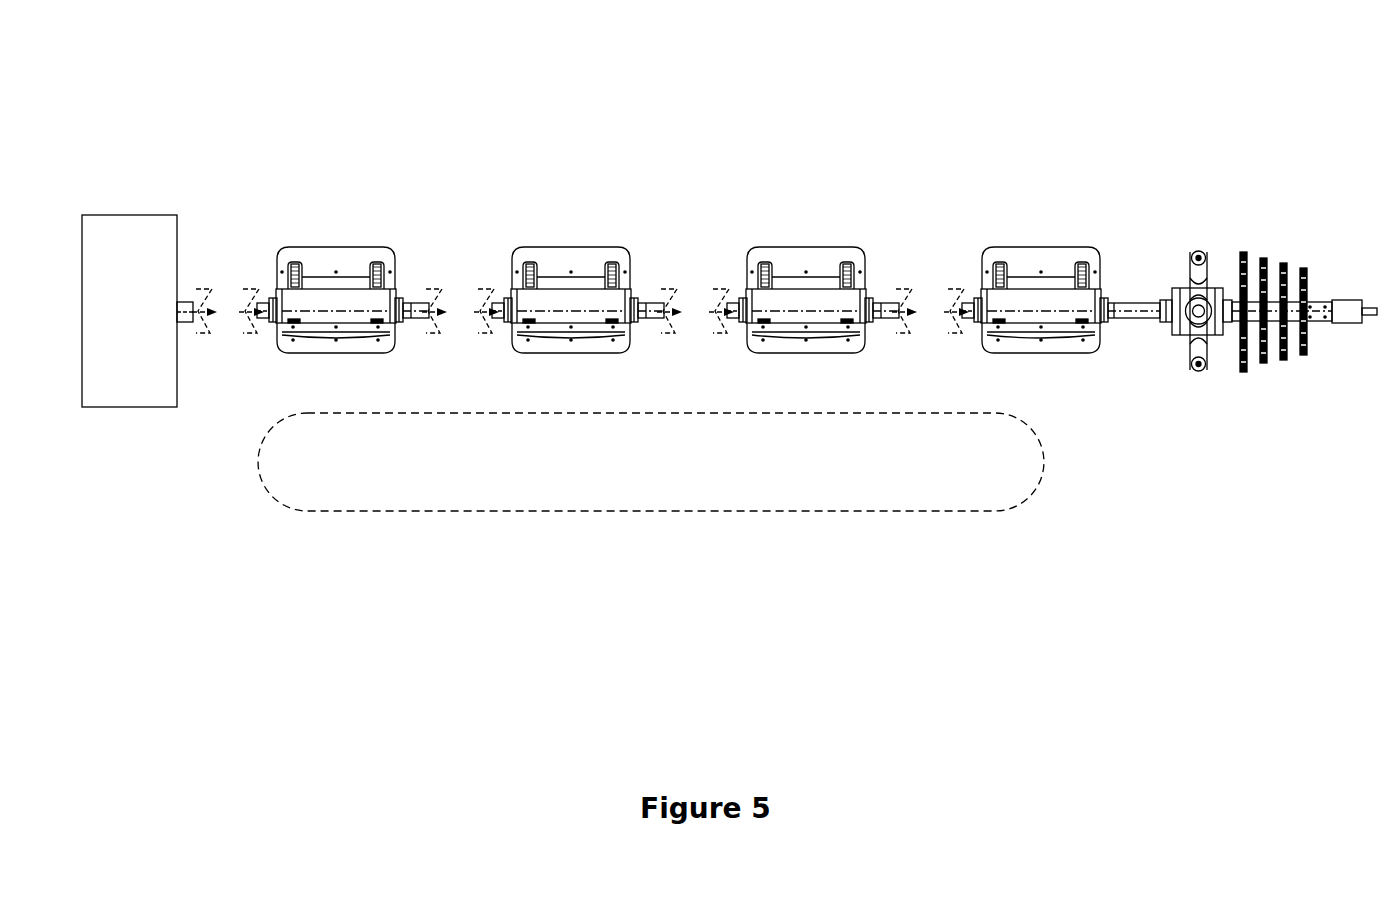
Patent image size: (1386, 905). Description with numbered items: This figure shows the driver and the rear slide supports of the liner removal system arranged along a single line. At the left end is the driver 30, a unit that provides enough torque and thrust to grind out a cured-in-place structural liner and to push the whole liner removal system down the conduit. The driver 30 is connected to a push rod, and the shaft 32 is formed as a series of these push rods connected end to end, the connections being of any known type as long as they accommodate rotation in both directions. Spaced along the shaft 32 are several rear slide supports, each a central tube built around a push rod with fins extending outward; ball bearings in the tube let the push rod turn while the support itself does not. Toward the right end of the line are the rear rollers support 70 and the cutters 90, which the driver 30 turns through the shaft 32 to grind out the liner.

The driver 30 is at (110, 385).
The shaft 32 is at (648, 517).
The rear rollers support 70 is at (1190, 373).
The cutters 90 is at (1253, 373).